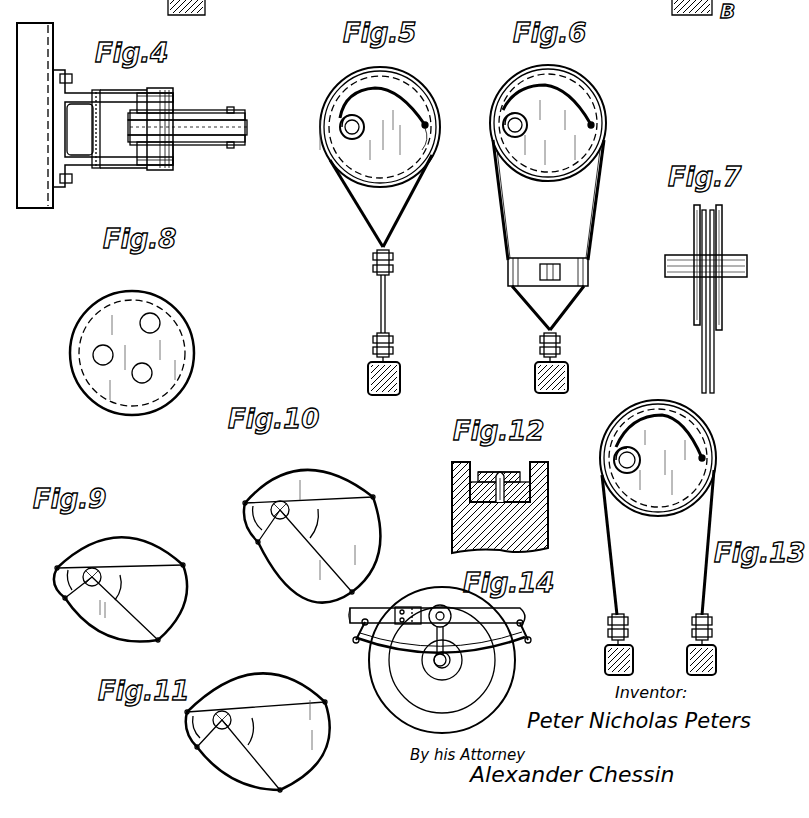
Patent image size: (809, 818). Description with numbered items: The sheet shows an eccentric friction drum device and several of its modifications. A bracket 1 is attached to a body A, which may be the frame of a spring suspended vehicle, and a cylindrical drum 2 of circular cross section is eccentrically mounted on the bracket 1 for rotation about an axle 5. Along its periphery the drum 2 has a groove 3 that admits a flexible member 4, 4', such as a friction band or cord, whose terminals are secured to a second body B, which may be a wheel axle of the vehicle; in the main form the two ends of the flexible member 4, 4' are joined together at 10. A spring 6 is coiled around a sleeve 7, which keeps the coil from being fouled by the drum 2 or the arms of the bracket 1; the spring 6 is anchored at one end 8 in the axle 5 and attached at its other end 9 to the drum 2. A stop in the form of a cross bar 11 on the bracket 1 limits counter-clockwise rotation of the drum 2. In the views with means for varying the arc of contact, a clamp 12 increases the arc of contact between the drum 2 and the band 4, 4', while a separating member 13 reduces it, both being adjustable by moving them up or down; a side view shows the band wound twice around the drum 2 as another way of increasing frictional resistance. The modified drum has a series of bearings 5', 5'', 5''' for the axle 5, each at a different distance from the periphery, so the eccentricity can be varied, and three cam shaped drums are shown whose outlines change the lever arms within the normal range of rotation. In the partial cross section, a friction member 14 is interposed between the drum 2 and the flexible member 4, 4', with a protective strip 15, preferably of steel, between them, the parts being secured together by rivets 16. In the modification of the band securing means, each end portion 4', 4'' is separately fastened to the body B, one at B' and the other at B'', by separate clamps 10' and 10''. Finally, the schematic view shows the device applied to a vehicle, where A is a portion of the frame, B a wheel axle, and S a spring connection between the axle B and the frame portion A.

In FIG. 4, the body A is at (35, 45).
In FIG. 14, the body A is at (524, 616).
In FIG. 4, the bracket 1 is at (82, 160).
In FIG. 14, the bracket 1 is at (430, 606).
In FIG. 4, the cross bar 11 is at (100, 140).
In FIG. 4, the cylindrical drum 2 is at (247, 116).
In FIG. 5, the cylindrical drum 2 is at (380, 175).
In FIG. 6, the cylindrical drum 2 is at (535, 170).
In FIG. 7, the cylindrical drum 2 is at (723, 214).
In FIG. 8, the cylindrical drum 2 is at (174, 351).
In FIG. 9, the cylindrical drum 2 is at (100, 622).
In FIG. 10, the cylindrical drum 2 is at (318, 572).
In FIG. 11, the cylindrical drum 2 is at (257, 698).
In FIG. 12, the cylindrical drum 2 is at (470, 526).
In FIG. 13, the cylindrical drum 2 is at (660, 495).
In FIG. 14, the cylindrical drum 2 is at (440, 606).
In FIG. 5, the groove 3 is at (405, 175).
In FIG. 6, the groove 3 is at (563, 178).
In FIG. 7, the groove 3 is at (694, 208).
In FIG. 8, the groove 3 is at (178, 375).
In FIG. 13, the groove 3 is at (686, 507).
In FIG. 4, the flexible member 4 is at (199, 127).
In FIG. 5, the flexible member 4 is at (407, 201).
In FIG. 6, the flexible member 4 is at (598, 200).
In FIG. 7, the flexible member 4 is at (727, 301).
In FIG. 12, the flexible member 4 is at (508, 473).
In FIG. 14, the flexible member 4 is at (441, 638).
In FIG. 4, the flexible member 4' is at (114, 119).
In FIG. 5, the flexible member 4' is at (356, 203).
In FIG. 6, the flexible member 4' is at (493, 200).
In FIG. 7, the flexible member 4' is at (689, 301).
In FIG. 13, the flexible member 4' is at (598, 545).
In FIG. 13, the band / strap (third) 4'' is at (723, 542).
In FIG. 4, the axle 5 is at (160, 144).
In FIG. 5, the axle 5 is at (332, 107).
In FIG. 6, the axle 5 is at (497, 106).
In FIG. 7, the axle 5 is at (712, 253).
In FIG. 9, the axle 5 is at (71, 558).
In FIG. 10, the axle 5 is at (263, 535).
In FIG. 11, the axle 5 is at (214, 686).
In FIG. 13, the axle 5 is at (612, 438).
In FIG. 14, the axle 5 is at (442, 633).
In FIG. 8, the bearing 5' is at (170, 309).
In FIG. 8, the bearing 5'' is at (79, 350).
In FIG. 8, the bearing 5''' is at (123, 401).
In FIG. 4, the spring 6 is at (198, 113).
In FIG. 5, the spring 6 is at (400, 100).
In FIG. 6, the spring 6 is at (575, 105).
In FIG. 13, the spring 6 is at (645, 417).
In FIG. 4, the sleeve 7 is at (165, 110).
In FIG. 5, the spring end 8 is at (346, 135).
In FIG. 6, the spring end 8 is at (510, 133).
In FIG. 13, the spring end 8 is at (630, 470).
In FIG. 4, the spring end 9 is at (232, 108).
In FIG. 5, the spring end 9 is at (428, 145).
In FIG. 6, the spring end 9 is at (596, 123).
In FIG. 13, the spring end 9 is at (708, 456).
In FIG. 5, the joint 10 is at (403, 345).
In FIG. 6, the joint 10 is at (555, 324).
In FIG. 13, the clamp 10' is at (637, 628).
In FIG. 13, the turnbuckle 10'' is at (723, 628).
In FIG. 5, the clamp 12 is at (393, 258).
In FIG. 6, the separating member 13 is at (585, 270).
In FIG. 12, the friction member 14 is at (530, 492).
In FIG. 12, the protective strip 15 is at (530, 472).
In FIG. 12, the rivets 16 is at (490, 470).
In FIG. 5, the second body B is at (399, 378).
In FIG. 6, the second body B is at (536, 377).
In FIG. 14, the second body B is at (435, 666).
In FIG. 13, the attachment point B' is at (635, 660).
In FIG. 13, the attachment point B'' is at (722, 660).
In FIG. 14, the spring connection S is at (480, 655).